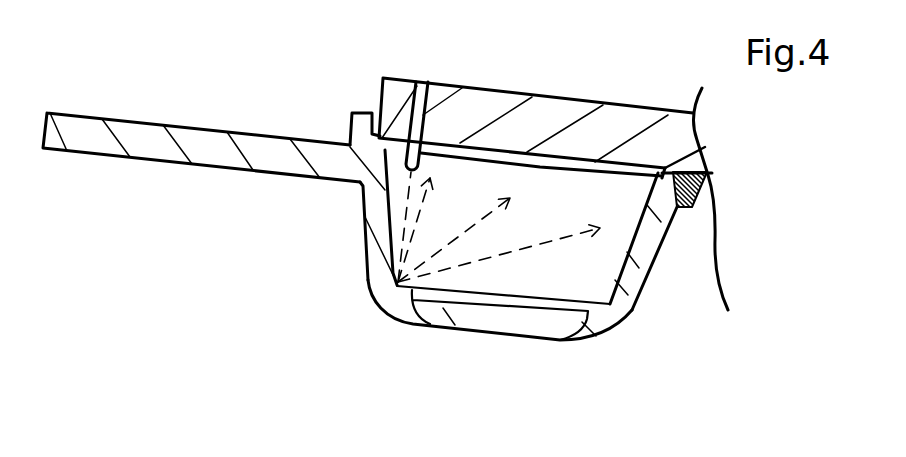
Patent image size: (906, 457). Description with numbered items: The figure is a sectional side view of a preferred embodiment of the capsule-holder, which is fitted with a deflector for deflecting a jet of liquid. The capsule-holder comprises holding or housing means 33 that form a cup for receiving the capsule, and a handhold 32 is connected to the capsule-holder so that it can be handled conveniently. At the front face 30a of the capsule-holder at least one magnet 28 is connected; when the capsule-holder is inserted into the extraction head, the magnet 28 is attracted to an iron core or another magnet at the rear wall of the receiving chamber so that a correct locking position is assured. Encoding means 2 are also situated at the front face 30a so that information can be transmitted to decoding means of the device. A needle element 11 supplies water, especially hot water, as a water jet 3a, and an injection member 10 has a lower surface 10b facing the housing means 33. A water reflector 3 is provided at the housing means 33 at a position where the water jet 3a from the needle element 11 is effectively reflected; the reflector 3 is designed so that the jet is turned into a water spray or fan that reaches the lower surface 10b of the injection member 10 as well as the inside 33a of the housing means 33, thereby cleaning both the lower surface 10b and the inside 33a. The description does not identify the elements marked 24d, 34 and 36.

The encoding means 2 is at (683, 185).
The water reflector 3 is at (390, 283).
The water jet 3a is at (403, 223).
The injection member 10 is at (472, 110).
The lower surface of the injection member 10b is at (540, 157).
The needle element 11 is at (410, 132).
The sealing element 24d is at (606, 85).
The magnet 28 is at (678, 205).
The front face of the capsule-holder 30a is at (683, 207).
The handhold 32 is at (88, 145).
The housing means 33 is at (372, 210).
The inside of the housing means 33a is at (627, 303).
The projection 34 is at (350, 122).
The receiving space 36 is at (523, 250).